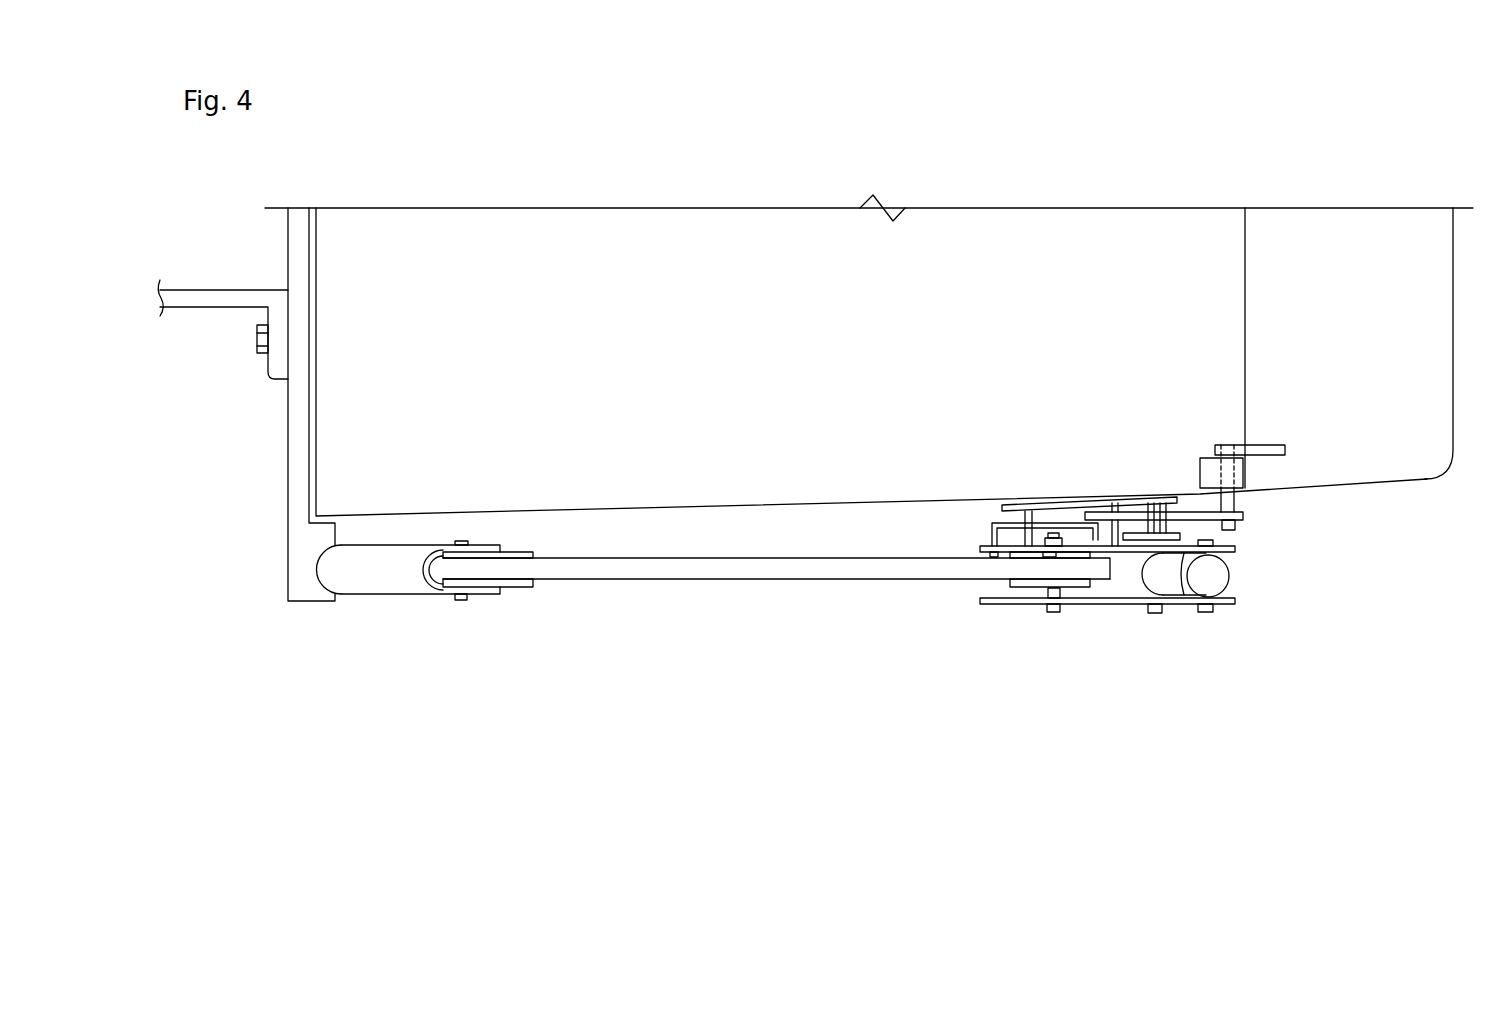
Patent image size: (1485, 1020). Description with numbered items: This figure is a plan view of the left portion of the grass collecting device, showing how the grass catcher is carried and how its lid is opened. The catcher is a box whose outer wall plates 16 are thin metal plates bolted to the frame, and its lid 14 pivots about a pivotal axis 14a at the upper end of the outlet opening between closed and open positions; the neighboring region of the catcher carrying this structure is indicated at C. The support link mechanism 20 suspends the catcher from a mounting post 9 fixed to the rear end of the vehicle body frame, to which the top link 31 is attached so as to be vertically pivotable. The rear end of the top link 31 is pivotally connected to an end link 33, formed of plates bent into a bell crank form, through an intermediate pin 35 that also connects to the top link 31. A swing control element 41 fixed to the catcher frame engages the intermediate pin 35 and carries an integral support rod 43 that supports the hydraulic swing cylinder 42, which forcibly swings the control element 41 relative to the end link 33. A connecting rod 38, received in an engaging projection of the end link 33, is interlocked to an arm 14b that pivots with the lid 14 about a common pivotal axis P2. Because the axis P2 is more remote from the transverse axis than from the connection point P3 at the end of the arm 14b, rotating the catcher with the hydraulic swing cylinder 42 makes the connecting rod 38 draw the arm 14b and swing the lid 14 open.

The outer wall plates 16 is at (762, 252).
The cabinet C is at (1079, 207).
The lid 14 is at (1390, 450).
The pivotal axis 14a is at (1230, 503).
The arm 14b is at (1187, 508).
The pivotal axis P2 is at (1228, 445).
The connection point P3 is at (1095, 512).
The swing control element 41 is at (1123, 527).
The connecting rod 38 is at (988, 531).
The end link 33 is at (1107, 553).
The intermediate pin 35 is at (1052, 613).
The support rod 43 is at (1153, 613).
The hydraulic swing cylinder 42 is at (1213, 575).
The top link 31 is at (833, 570).
The support link mechanism 20 is at (776, 650).
The mounting post 9 is at (395, 580).